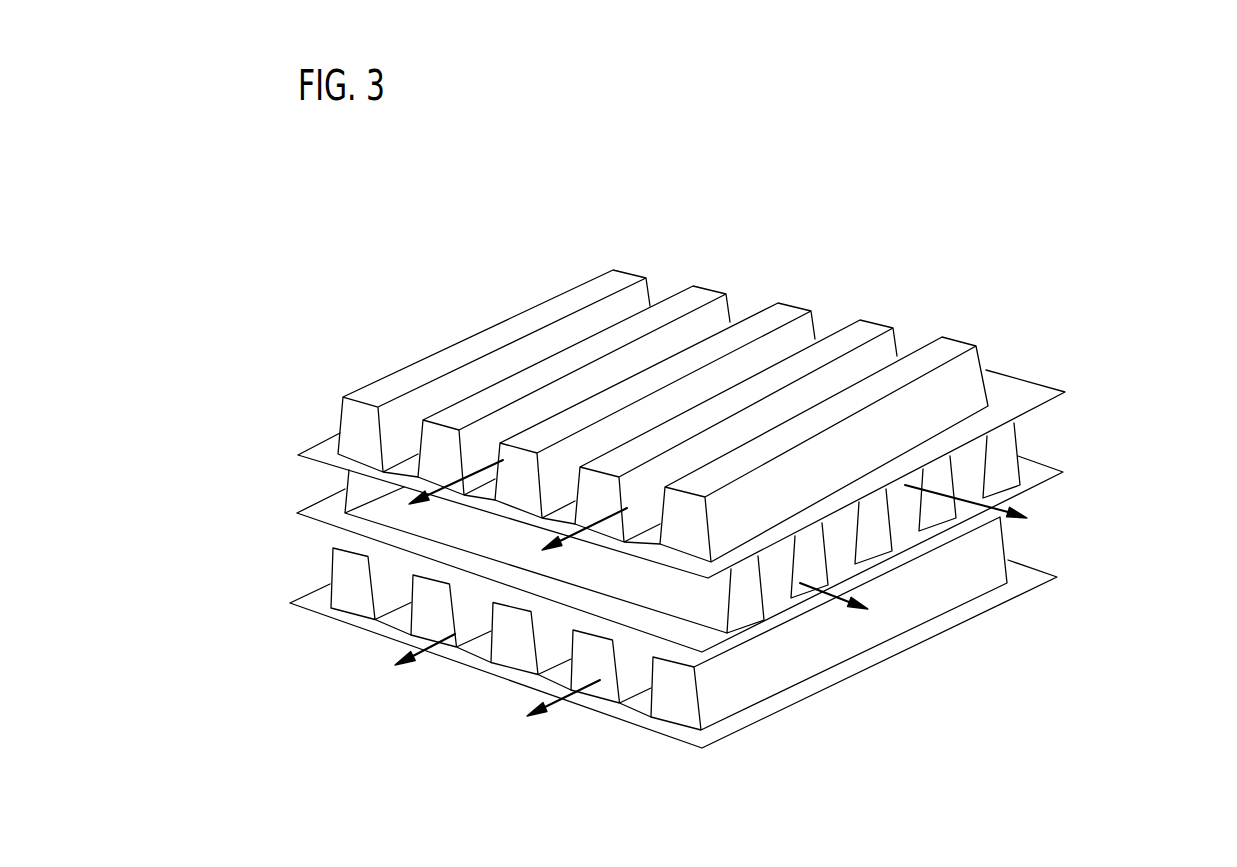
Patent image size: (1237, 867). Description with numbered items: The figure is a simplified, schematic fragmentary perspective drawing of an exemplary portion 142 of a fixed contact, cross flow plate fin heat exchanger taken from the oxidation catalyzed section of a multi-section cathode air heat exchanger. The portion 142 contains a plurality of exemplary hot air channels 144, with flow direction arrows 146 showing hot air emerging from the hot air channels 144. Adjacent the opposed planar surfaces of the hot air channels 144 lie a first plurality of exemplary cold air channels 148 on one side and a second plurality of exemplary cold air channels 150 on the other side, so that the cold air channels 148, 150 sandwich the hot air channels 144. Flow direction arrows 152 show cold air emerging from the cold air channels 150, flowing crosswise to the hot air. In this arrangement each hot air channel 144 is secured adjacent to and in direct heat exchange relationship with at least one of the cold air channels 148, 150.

The portion of fixed contact heat exchanger 142 is at (984, 212).
The hot air channels 144 is at (742, 620).
The flow direction arrows 146 is at (850, 597).
The first plurality of cold air channels 148 is at (797, 303).
The second plurality of cold air channels 150 is at (360, 603).
The flow direction arrows 152 is at (567, 545).